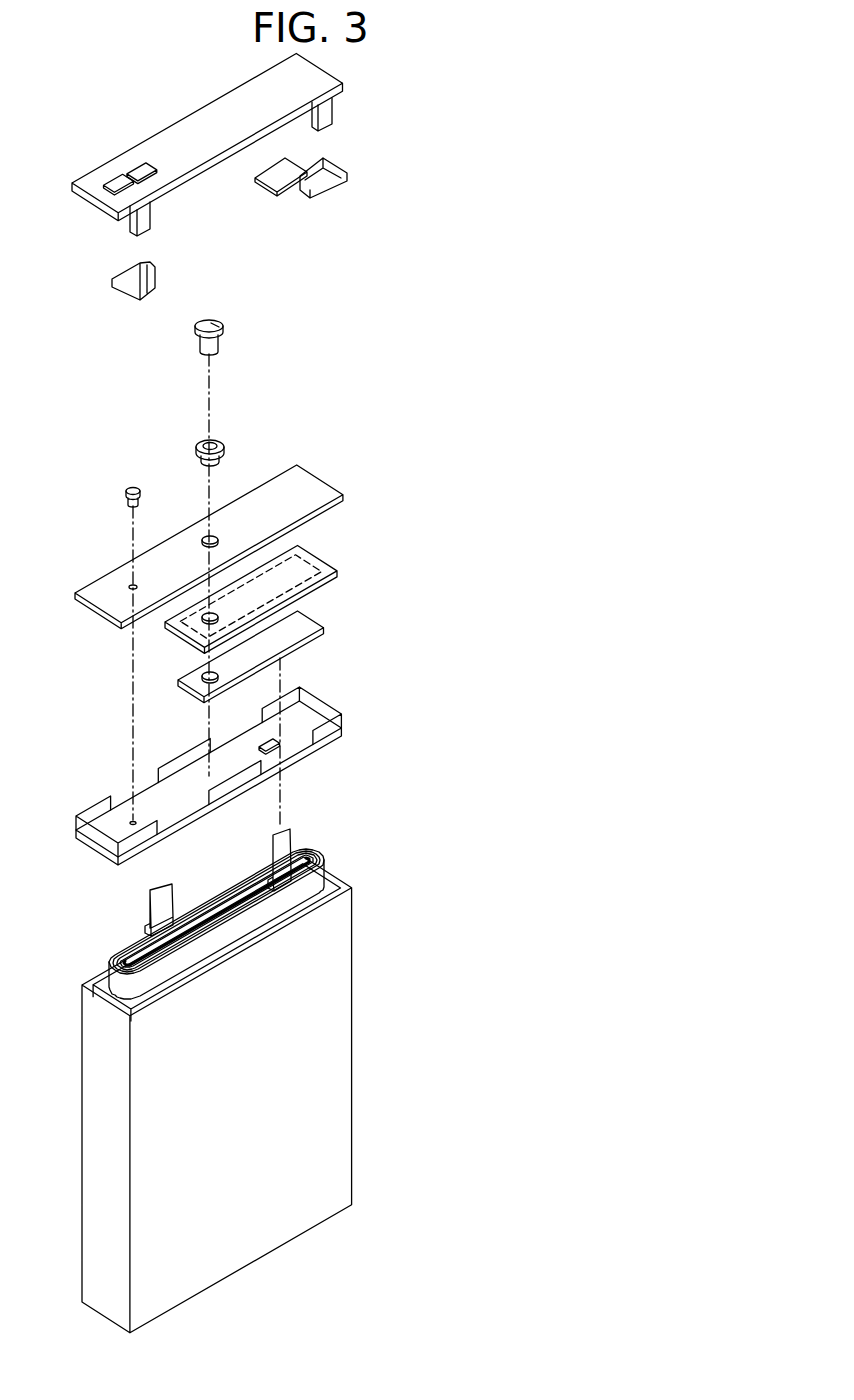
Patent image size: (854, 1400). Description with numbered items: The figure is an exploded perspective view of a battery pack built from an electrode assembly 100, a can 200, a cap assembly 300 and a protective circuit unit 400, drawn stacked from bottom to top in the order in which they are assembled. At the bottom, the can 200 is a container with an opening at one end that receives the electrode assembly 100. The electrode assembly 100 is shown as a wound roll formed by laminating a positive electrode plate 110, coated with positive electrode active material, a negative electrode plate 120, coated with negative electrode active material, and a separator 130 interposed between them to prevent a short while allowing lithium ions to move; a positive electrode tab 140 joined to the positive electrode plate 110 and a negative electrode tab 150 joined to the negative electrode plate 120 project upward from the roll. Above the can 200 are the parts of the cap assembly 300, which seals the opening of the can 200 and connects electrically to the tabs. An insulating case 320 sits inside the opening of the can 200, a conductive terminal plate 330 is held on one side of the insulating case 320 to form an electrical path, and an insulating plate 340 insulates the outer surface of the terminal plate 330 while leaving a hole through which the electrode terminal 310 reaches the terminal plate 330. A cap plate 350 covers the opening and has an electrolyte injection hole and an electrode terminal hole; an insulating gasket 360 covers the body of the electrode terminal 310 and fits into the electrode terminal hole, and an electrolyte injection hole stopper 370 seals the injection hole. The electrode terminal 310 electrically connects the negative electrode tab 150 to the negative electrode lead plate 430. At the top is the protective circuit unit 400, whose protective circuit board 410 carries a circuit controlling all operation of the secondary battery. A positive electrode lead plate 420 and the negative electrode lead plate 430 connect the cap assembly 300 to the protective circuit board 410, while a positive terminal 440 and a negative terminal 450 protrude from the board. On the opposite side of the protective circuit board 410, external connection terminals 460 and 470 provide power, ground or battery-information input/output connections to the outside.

The electrode assembly 100 is at (405, 800).
The positive electrode plate 110 is at (302, 860).
The negative electrode plate 120 is at (325, 868).
The separator 130 is at (307, 868).
The positive electrode tab 140 is at (157, 904).
The negative electrode tab 150 is at (279, 851).
The can 200 is at (340, 1031).
The cap assembly 300 is at (462, 355).
The electrode terminal 310 is at (219, 325).
The insulating case 320 is at (313, 710).
The terminal plate 330 is at (305, 618).
The insulating plate 340 is at (312, 551).
The cap plate 350 is at (313, 487).
The insulating gasket 360 is at (223, 444).
The electrolyte injection hole stopper 370 is at (131, 488).
The protective circuit unit 400 is at (462, 53).
The protective circuit board 410 is at (318, 72).
The positive electrode lead plate 420 is at (150, 280).
The negative electrode lead plate 430 is at (340, 166).
The positive terminal 440 is at (150, 220).
The negative terminal 450 is at (328, 112).
The external connection terminal 460 is at (139, 172).
The external connection terminal 470 is at (116, 183).